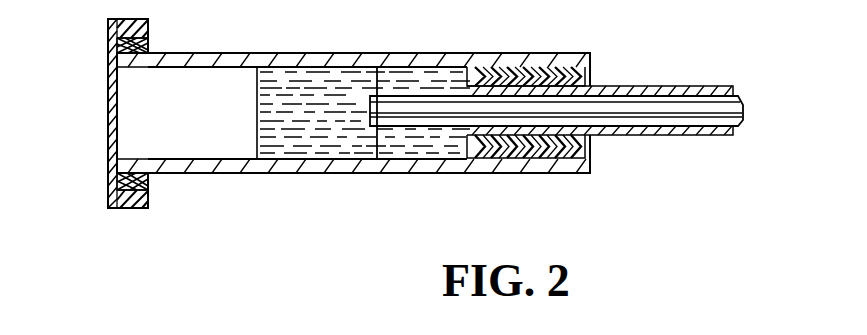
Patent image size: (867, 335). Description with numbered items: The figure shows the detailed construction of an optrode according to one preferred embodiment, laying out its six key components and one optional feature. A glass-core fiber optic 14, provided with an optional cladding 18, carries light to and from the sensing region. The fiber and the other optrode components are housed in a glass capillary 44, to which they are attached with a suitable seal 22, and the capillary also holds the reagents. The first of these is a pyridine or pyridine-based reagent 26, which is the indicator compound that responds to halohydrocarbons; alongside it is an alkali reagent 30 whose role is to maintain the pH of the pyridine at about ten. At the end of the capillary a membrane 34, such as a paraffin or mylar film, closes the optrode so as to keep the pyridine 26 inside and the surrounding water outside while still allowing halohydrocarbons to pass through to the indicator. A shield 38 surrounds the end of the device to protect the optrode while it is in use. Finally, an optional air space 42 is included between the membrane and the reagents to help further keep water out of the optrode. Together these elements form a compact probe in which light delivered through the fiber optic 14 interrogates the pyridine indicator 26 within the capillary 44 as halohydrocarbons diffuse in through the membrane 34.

The glass-core fiber optic 14 is at (737, 103).
The cladding 18 is at (620, 135).
The seal 22 is at (532, 150).
The pyridine or pyridine-based reagent 26 is at (302, 110).
The alkali reagent 30 is at (435, 142).
The membrane 34 is at (108, 137).
The shield 38 is at (128, 208).
The air space 42 is at (190, 128).
The glass capillary 44 is at (275, 173).